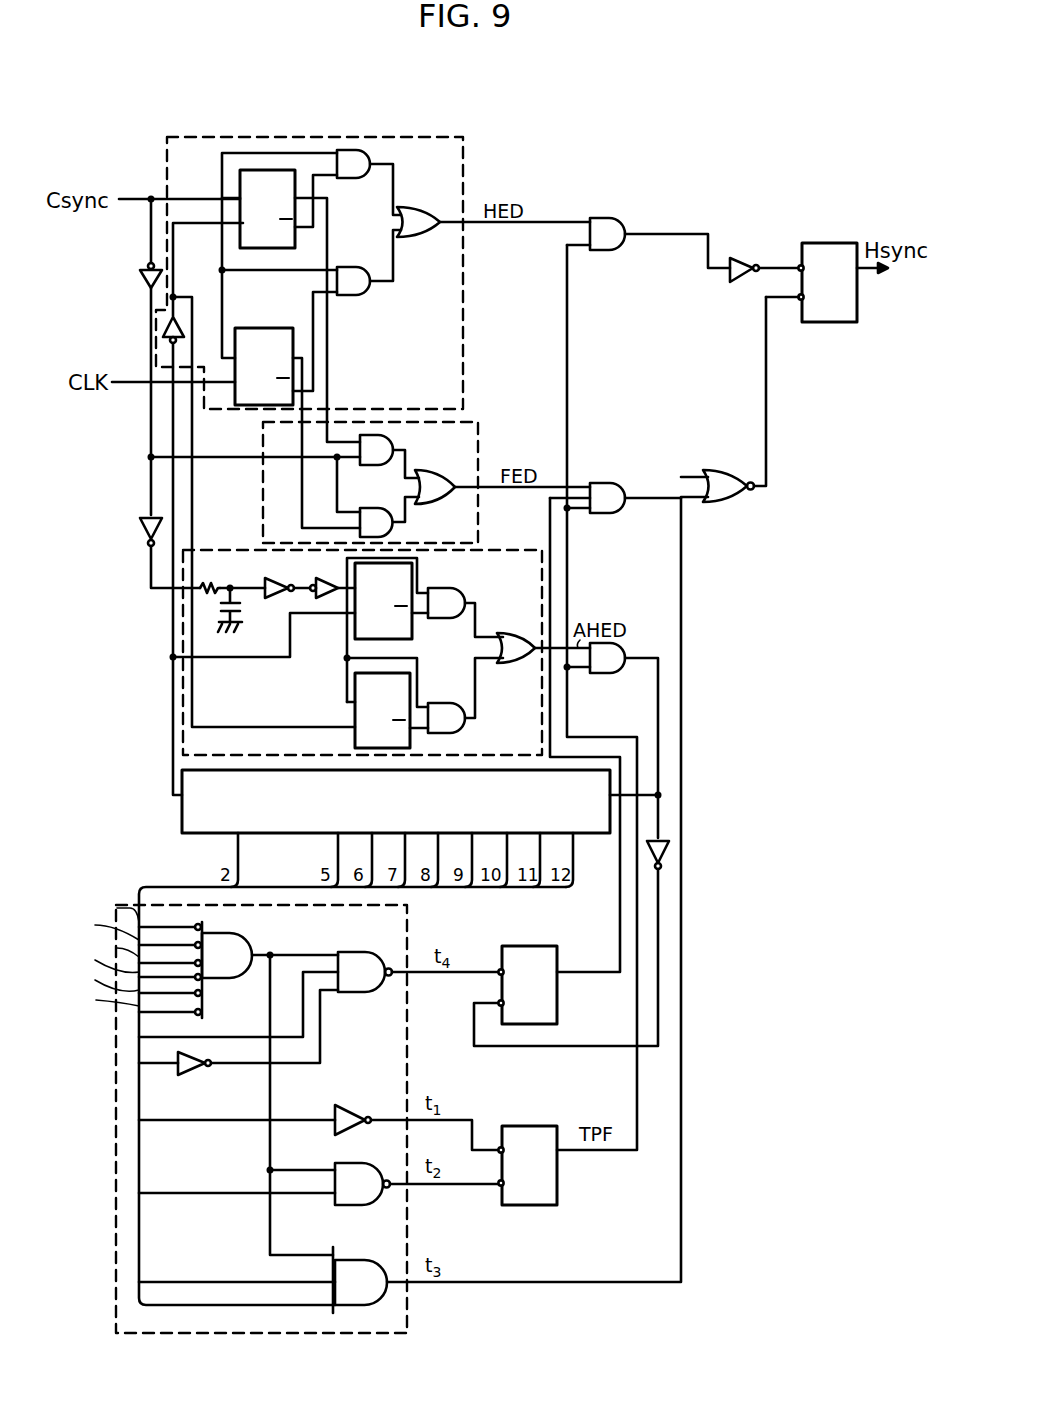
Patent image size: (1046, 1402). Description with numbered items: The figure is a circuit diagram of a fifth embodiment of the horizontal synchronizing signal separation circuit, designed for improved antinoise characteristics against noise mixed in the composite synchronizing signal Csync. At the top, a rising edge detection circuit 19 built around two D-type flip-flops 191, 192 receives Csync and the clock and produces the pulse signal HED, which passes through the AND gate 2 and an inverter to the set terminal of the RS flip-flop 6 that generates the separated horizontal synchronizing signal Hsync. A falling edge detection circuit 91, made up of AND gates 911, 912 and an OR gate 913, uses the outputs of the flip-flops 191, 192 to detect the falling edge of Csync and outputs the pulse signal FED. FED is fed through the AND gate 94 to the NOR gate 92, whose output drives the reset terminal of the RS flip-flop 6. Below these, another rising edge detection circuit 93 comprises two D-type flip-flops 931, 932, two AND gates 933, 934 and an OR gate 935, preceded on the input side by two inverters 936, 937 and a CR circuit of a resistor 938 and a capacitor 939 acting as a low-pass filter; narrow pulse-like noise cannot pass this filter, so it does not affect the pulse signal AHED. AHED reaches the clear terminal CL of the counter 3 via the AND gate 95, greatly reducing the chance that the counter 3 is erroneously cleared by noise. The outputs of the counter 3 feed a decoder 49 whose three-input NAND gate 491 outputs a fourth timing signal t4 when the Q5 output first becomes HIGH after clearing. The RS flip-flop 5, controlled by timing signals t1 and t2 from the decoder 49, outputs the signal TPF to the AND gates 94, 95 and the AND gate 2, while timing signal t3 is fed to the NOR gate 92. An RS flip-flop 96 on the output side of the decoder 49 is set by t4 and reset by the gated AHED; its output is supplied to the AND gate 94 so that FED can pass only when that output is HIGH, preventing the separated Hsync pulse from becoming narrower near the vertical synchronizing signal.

The rising edge detection circuit 19 is at (465, 160).
The D-type flip-flop 191 is at (240, 183).
The D-type flip-flop 192 is at (262, 328).
The AND gate 2 is at (617, 218).
The RS flip-flop 6 is at (822, 323).
The falling edge detection circuit 91 is at (479, 451).
The AND gate 911 is at (397, 440).
The AND gate 912 is at (373, 508).
The OR gate 913 is at (441, 470).
The AND gate 94 is at (612, 483).
The NOR gate 92 is at (720, 503).
The rising edge detection circuit 93 is at (553, 583).
The resistor 938 is at (203, 585).
The capacitor 939 is at (215, 630).
The inverter 937 is at (273, 604).
The inverter 936 is at (327, 580).
The D-type flip-flop 931 is at (355, 633).
The D-type flip-flop 932 is at (355, 743).
The AND gate 933 is at (458, 588).
The AND gate 934 is at (463, 730).
The OR gate 935 is at (511, 634).
The AND gate 95 is at (617, 673).
The counter 3 is at (580, 833).
The decoder 49 is at (408, 1331).
The three-input NAND gate 491 is at (358, 992).
The RS flip-flop 96 is at (528, 946).
The RS flip-flop 5 is at (557, 1181).